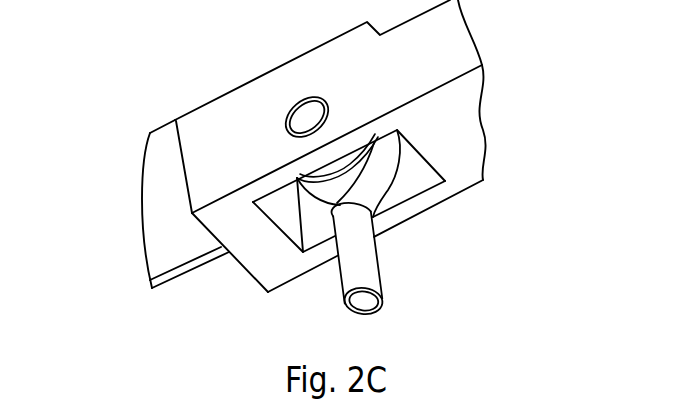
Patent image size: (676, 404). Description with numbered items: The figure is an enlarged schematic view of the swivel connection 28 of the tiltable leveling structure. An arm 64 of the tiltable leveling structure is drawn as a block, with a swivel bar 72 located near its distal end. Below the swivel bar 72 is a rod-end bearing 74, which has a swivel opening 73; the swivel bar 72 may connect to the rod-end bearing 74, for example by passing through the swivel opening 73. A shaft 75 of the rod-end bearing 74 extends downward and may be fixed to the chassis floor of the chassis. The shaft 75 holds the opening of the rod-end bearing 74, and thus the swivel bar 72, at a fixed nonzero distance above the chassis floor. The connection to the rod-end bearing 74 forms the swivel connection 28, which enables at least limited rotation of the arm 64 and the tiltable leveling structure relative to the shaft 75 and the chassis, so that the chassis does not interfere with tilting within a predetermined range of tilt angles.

The swivel connection 28 is at (140, 99).
The arm 64 is at (473, 132).
The swivel bar 72 is at (293, 110).
The swivel opening 73 is at (325, 163).
The rod-end bearing 74 is at (380, 188).
The shaft 75 is at (342, 285).